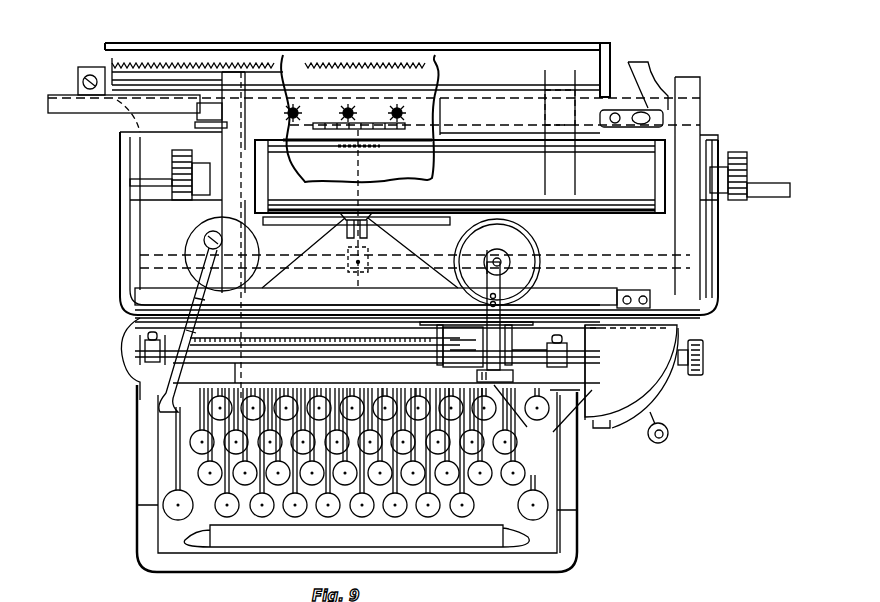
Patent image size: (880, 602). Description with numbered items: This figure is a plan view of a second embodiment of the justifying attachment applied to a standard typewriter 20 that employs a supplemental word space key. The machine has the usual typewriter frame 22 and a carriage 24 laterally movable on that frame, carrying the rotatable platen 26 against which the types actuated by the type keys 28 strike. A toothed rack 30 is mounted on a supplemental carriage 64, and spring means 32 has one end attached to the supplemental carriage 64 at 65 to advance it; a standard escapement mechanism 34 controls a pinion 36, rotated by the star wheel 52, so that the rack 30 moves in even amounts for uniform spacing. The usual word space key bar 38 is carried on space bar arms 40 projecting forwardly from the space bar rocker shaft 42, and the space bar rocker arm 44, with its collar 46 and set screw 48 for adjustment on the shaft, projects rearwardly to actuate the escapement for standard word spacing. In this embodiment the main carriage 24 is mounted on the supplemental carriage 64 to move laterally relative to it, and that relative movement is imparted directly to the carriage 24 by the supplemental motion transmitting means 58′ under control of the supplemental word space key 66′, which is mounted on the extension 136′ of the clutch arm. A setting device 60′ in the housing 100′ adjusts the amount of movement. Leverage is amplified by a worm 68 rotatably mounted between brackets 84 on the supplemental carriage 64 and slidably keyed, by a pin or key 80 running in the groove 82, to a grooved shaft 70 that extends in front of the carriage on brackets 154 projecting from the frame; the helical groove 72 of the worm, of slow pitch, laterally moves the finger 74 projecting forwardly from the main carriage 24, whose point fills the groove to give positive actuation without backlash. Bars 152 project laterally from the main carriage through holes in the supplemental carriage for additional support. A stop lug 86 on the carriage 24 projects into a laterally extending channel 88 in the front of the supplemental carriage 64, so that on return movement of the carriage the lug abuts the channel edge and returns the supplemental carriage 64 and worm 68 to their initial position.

The typewriter 20 is at (137, 385).
The typewriter frame 22 is at (140, 232).
The carriage 24 is at (700, 115).
The platen 26 is at (460, 176).
The type keys 28 is at (380, 436).
The toothed rack 30 is at (403, 148).
The spring means 32 is at (252, 100).
The escapement mechanism 34 is at (365, 133).
The pinion 36 is at (343, 148).
The word space key bar 38 is at (356, 537).
The space bar arms 40 is at (487, 510).
The space bar rocker shaft 42 is at (415, 253).
The space bar rocker arm 44 is at (356, 209).
The collar 46 is at (368, 236).
The set screw 48 is at (360, 270).
The star wheel 52 is at (348, 113).
The supplemental motion transmitting means 58′ is at (543, 415).
The setting device 60′ is at (667, 395).
The supplemental carriage 64 is at (718, 275).
The spring attachment point 65 is at (632, 107).
The supplemental word space key 66′ is at (668, 435).
The worm 68 is at (437, 365).
The grooved shaft 70 is at (266, 358).
The helical groove 72 is at (493, 363).
The finger 74 is at (498, 294).
The pin or key 80 is at (513, 360).
The groove 82 is at (207, 357).
The brackets 84 is at (400, 355).
The stop lug 86 is at (690, 325).
The channel 88 is at (615, 318).
The housing 100′ is at (595, 426).
The arm extension 136′ is at (663, 413).
The bars 152 is at (150, 182).
The brackets 154 is at (140, 348).